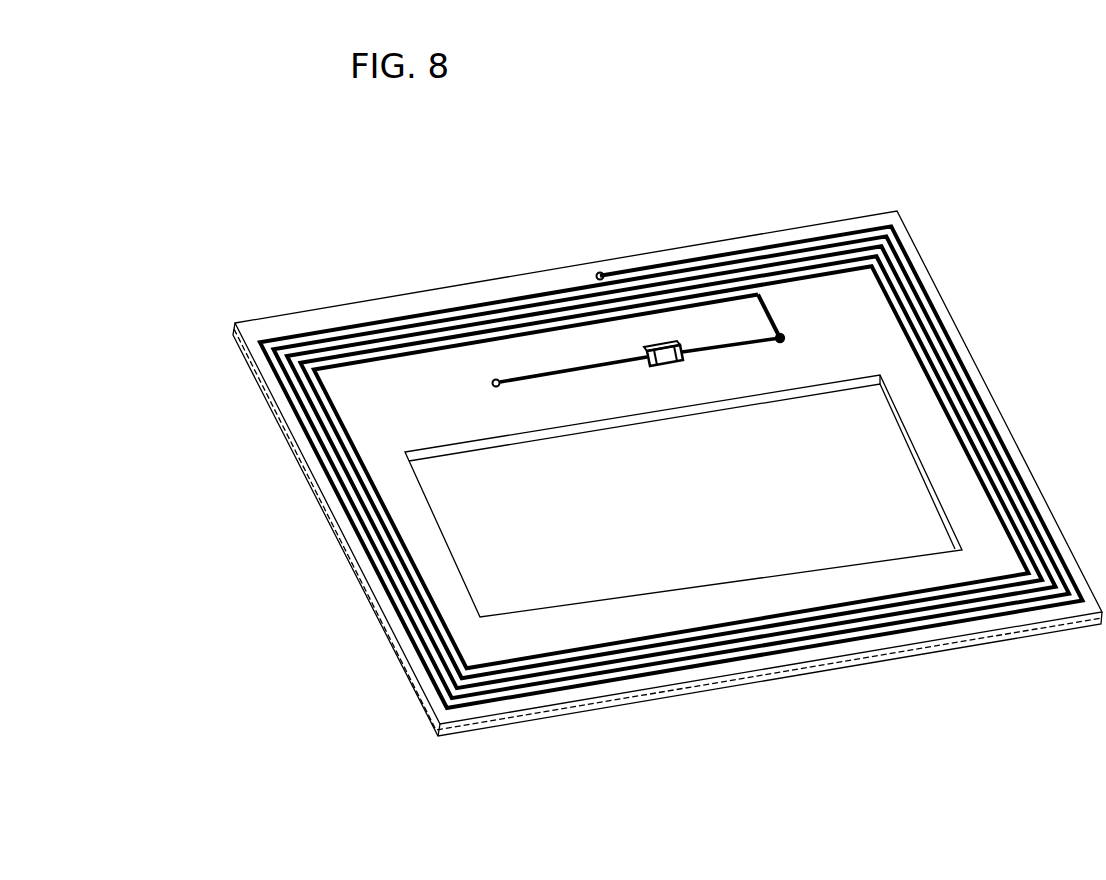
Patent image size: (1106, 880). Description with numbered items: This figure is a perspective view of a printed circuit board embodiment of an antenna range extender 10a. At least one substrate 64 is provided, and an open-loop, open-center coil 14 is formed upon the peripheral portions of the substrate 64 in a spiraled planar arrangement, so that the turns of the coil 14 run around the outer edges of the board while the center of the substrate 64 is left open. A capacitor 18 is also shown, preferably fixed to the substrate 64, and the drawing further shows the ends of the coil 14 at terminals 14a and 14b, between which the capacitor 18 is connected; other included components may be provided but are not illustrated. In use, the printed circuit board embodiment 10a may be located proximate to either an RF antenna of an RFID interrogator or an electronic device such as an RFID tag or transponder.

The antenna range extender 10a is at (1018, 695).
The substrate 64 is at (400, 622).
The open-loop coil 14 is at (680, 657).
The first antenna terminal 14a is at (490, 385).
The second antenna terminal 14b is at (787, 341).
The capacitor 18 is at (668, 358).